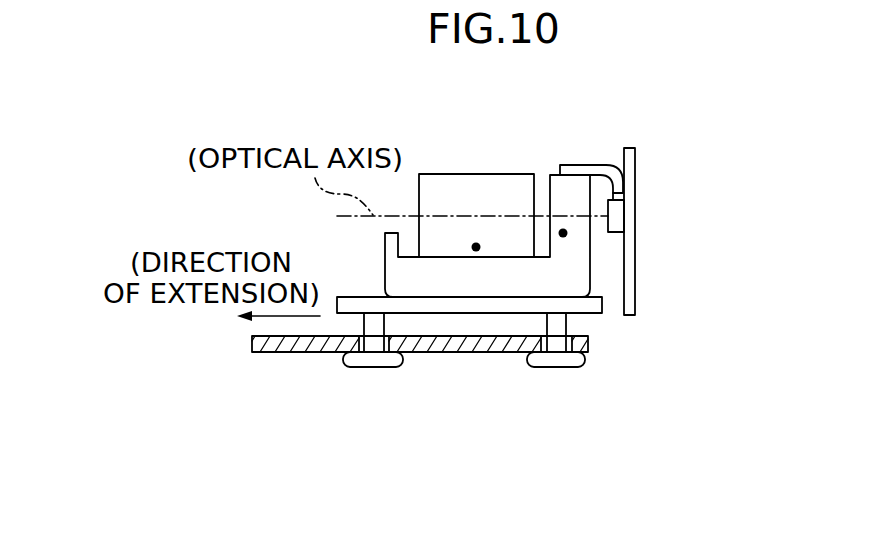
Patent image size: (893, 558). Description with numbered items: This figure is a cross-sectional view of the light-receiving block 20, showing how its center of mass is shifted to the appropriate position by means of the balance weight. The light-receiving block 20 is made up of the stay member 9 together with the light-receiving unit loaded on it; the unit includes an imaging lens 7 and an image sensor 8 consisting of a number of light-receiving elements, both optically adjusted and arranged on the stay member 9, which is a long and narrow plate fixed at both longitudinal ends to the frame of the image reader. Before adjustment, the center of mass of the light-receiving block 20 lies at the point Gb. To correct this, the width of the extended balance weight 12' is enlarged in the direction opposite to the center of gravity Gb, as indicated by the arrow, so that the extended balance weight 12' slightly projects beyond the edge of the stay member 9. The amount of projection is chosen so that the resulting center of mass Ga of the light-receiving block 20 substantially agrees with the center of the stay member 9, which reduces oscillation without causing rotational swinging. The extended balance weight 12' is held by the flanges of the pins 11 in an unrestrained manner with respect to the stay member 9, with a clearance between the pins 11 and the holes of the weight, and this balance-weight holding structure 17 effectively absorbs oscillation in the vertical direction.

The imaging lens 7 is at (478, 174).
The image sensor 8 is at (617, 232).
The stay member 9 is at (377, 297).
The pins 11 is at (377, 367).
The extended balance weight 12' is at (420, 384).
The balance-weight holding structure 17 is at (630, 322).
The light-receiving block 20 is at (700, 148).
The center of mass Ga is at (476, 243).
The center of gravity Gb is at (563, 229).